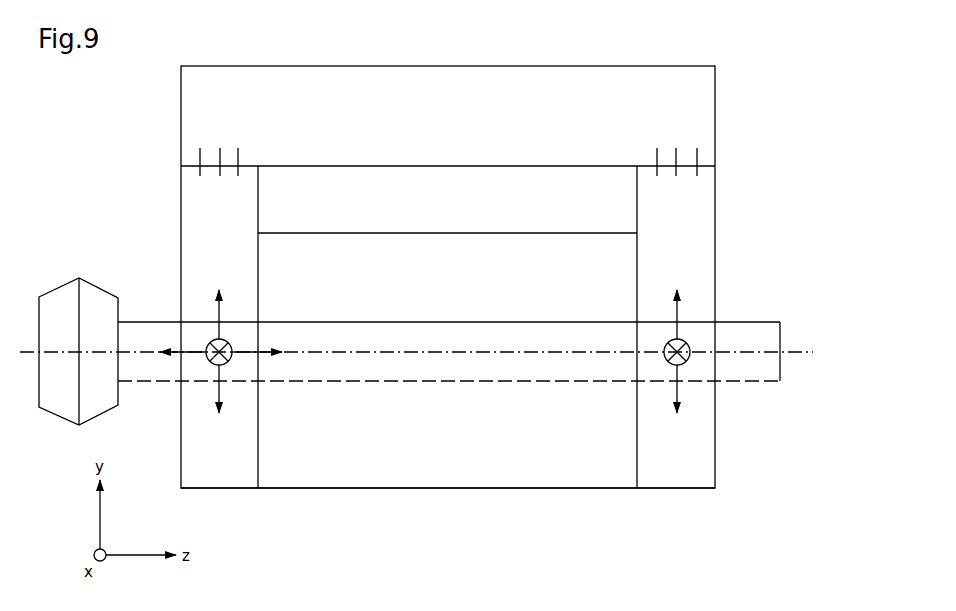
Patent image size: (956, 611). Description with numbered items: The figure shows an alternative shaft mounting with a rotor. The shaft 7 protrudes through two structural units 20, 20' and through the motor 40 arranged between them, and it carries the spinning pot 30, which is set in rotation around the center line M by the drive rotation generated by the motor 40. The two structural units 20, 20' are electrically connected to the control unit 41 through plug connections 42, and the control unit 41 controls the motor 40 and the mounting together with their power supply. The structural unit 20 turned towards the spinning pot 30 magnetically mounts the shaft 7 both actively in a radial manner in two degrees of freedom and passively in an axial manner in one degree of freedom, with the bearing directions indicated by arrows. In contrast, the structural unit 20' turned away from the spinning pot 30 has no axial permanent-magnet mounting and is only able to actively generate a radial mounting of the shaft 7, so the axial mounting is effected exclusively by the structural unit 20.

The control unit 41 is at (416, 97).
The plug connections 42 is at (190, 158).
The structural unit 20 is at (184, 327).
The structural unit 20' is at (710, 327).
The motor 40 is at (443, 462).
The spinning pot 30 is at (100, 313).
The shaft 7 is at (746, 368).
The center line M is at (805, 345).